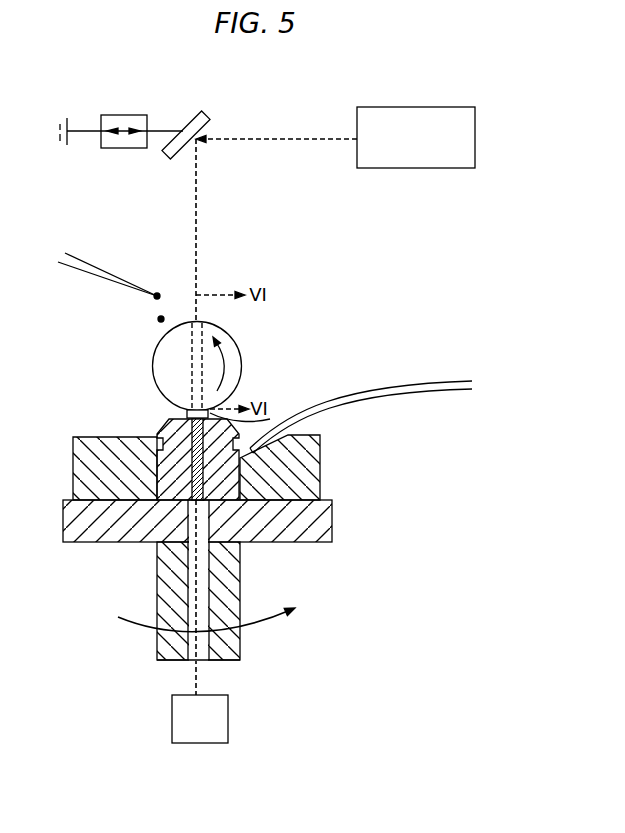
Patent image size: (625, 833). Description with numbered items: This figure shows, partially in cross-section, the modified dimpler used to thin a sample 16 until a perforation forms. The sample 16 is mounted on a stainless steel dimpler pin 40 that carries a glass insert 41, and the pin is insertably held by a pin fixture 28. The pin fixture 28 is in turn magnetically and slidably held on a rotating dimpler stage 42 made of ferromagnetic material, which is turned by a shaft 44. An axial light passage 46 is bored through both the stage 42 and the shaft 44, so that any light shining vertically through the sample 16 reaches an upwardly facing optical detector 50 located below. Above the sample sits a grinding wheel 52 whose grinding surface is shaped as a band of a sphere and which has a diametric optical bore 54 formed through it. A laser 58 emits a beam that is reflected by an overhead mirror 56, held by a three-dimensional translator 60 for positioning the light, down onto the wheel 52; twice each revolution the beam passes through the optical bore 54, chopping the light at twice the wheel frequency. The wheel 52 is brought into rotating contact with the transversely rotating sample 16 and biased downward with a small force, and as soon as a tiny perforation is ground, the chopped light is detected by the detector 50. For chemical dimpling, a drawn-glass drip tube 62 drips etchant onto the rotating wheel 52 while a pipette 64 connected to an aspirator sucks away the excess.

The sample 16 is at (270, 419).
The pin fixture 28 is at (321, 463).
The dimpler pin 40 is at (165, 420).
The glass insert 41 is at (157, 435).
The rotating dimpler stage 42 is at (333, 518).
The shaft 44 is at (241, 572).
The axial light passage 46 is at (203, 666).
The optical detector 50 is at (171, 713).
The grinding wheel 52 is at (241, 357).
The optical bore 54 is at (203, 331).
The mirror 56 is at (186, 114).
The laser 58 is at (430, 107).
The three-dimensional translator 60 is at (118, 114).
The drip tube 62 is at (105, 270).
The pipette 64 is at (414, 382).